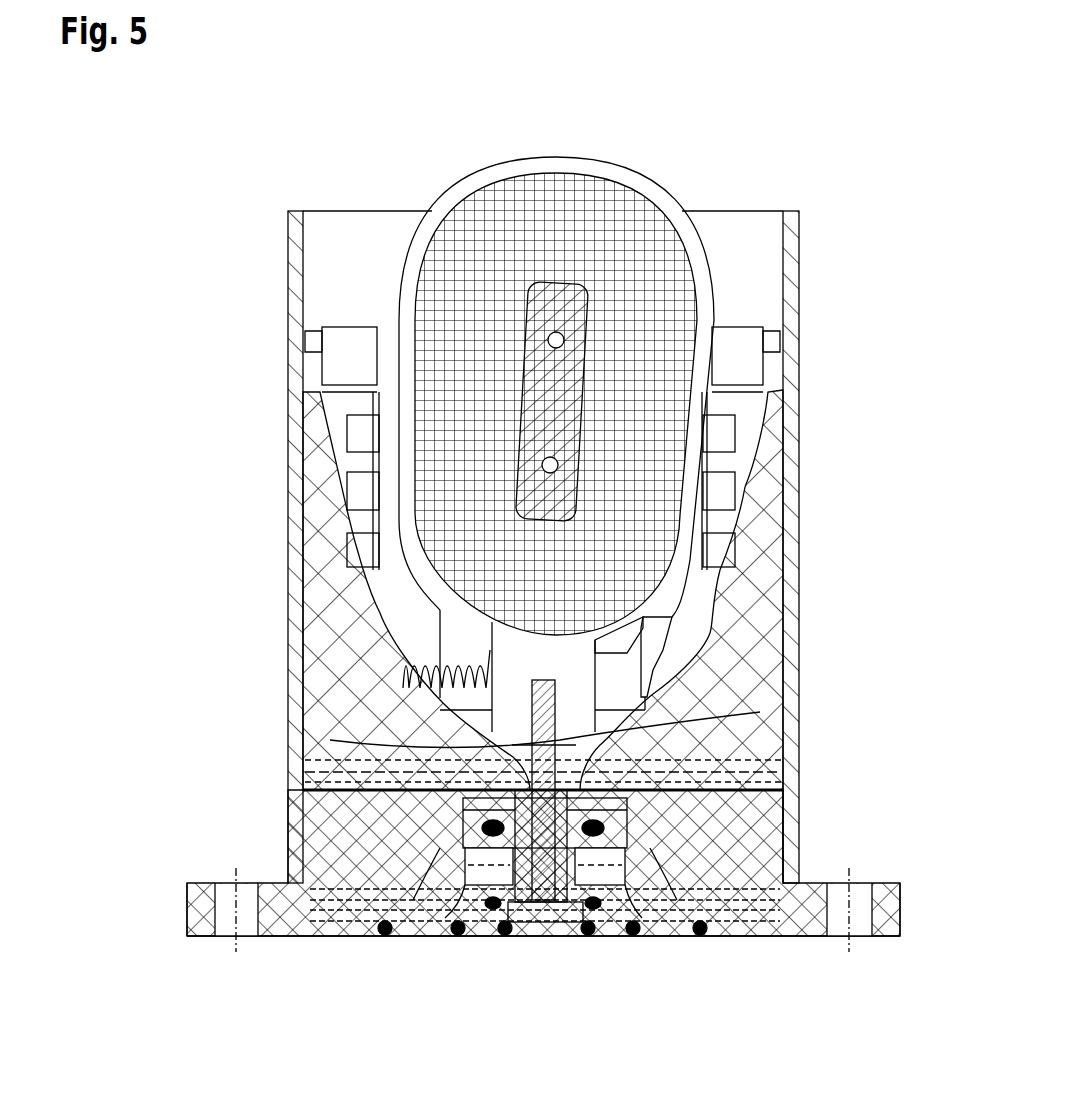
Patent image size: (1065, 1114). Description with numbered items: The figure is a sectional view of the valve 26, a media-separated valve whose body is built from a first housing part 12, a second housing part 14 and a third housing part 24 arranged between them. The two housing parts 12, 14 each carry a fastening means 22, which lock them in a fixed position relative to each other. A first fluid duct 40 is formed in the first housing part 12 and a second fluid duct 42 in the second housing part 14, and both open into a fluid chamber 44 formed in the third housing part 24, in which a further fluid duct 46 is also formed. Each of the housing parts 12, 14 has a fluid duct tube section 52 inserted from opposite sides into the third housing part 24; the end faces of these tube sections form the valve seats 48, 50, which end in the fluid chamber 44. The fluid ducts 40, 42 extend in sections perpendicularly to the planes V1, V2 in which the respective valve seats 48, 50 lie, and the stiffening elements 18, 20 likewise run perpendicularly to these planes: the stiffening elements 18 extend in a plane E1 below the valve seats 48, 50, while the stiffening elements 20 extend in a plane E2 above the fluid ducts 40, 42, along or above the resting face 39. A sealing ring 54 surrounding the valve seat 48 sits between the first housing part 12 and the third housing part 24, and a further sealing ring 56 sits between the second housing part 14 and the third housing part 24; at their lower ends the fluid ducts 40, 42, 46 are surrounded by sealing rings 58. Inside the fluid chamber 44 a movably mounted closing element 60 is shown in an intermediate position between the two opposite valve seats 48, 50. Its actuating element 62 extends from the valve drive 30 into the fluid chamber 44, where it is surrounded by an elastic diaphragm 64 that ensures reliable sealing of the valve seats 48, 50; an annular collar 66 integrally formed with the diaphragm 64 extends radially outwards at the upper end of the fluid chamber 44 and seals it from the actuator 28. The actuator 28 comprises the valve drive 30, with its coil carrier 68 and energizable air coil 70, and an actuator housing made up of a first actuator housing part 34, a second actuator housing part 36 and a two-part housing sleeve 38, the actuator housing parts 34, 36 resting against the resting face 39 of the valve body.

The first housing part 12 is at (300, 842).
The second housing part 14 is at (720, 808).
The stiffening element 18 is at (313, 940).
The stiffening element 20 is at (770, 745).
The fastening means 22 is at (188, 936).
The third housing part 24 is at (783, 792).
The valve 26 is at (846, 108).
The actuator 28 is at (806, 342).
The valve drive 30 is at (603, 192).
The first actuator housing part 34 is at (303, 612).
The second actuator housing part 36 is at (735, 548).
The housing sleeve 38 is at (290, 270).
The resting face 39 is at (500, 793).
The first fluid duct 40 is at (440, 870).
The second fluid duct 42 is at (660, 870).
The fluid chamber 44 is at (557, 920).
The fluid duct 46 is at (537, 925).
The valve seat 48 is at (528, 922).
The valve seat 50 is at (594, 910).
The fluid duct tube section 52 is at (470, 935).
The sealing ring 54 is at (485, 822).
The sealing ring 56 is at (610, 830).
The sealing rings 58 is at (385, 938).
The closing element 60 is at (445, 768).
The actuating element 62 is at (556, 690).
The diaphragm 64 is at (470, 845).
The collar 66 is at (470, 778).
The coil carrier 68 is at (495, 174).
The air coil 70 is at (468, 255).
The plane E1 is at (280, 940).
The plane E2 is at (765, 752).
The plane V1 is at (510, 922).
The plane V2 is at (565, 922).